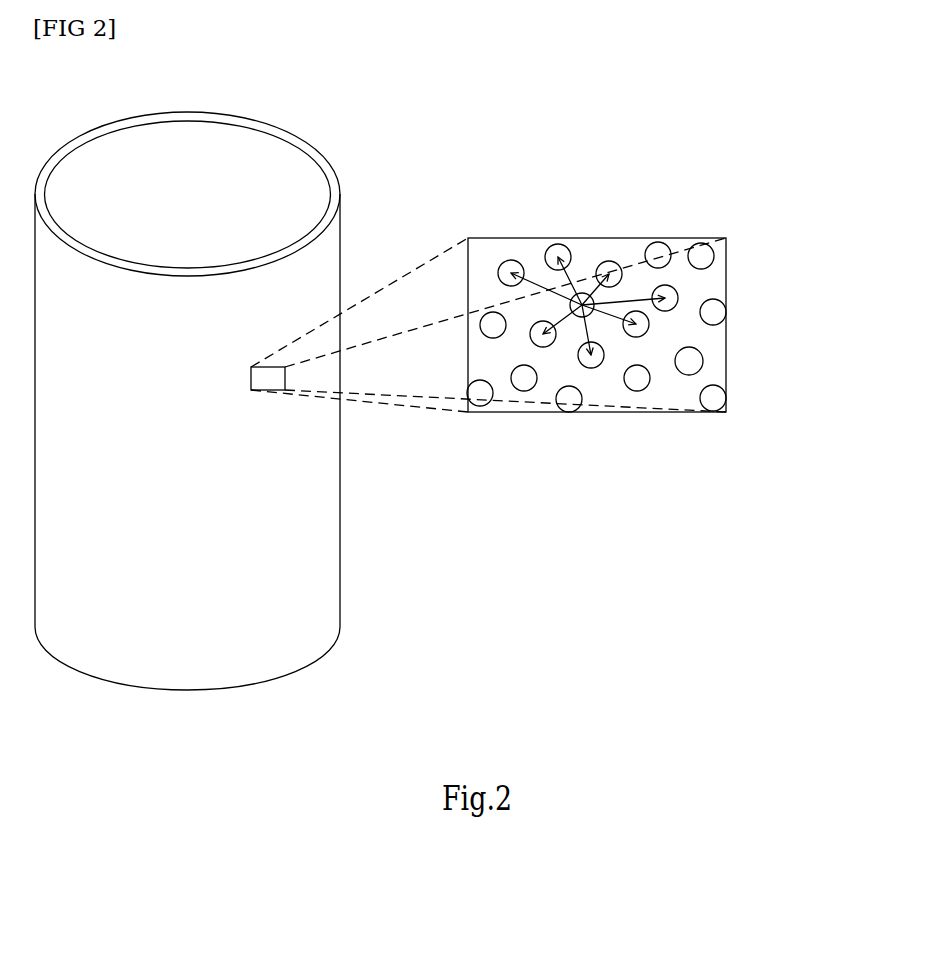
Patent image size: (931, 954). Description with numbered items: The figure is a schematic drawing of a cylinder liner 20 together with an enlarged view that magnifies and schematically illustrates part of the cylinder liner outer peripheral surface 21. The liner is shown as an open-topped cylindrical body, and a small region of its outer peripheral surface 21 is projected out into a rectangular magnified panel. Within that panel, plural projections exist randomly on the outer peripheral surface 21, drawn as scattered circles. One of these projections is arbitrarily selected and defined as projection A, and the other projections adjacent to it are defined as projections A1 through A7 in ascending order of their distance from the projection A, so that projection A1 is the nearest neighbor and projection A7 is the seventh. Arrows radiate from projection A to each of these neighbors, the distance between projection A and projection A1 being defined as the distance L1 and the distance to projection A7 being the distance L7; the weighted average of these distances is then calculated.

The cylinder liner 20 is at (325, 89).
The cylinder liner outer peripheral surface 21 is at (245, 376).
The projection A is at (580, 316).
The projection A1 is at (615, 262).
The projection A7 is at (674, 292).
The distance L1 is at (590, 293).
The distance L7 is at (636, 302).